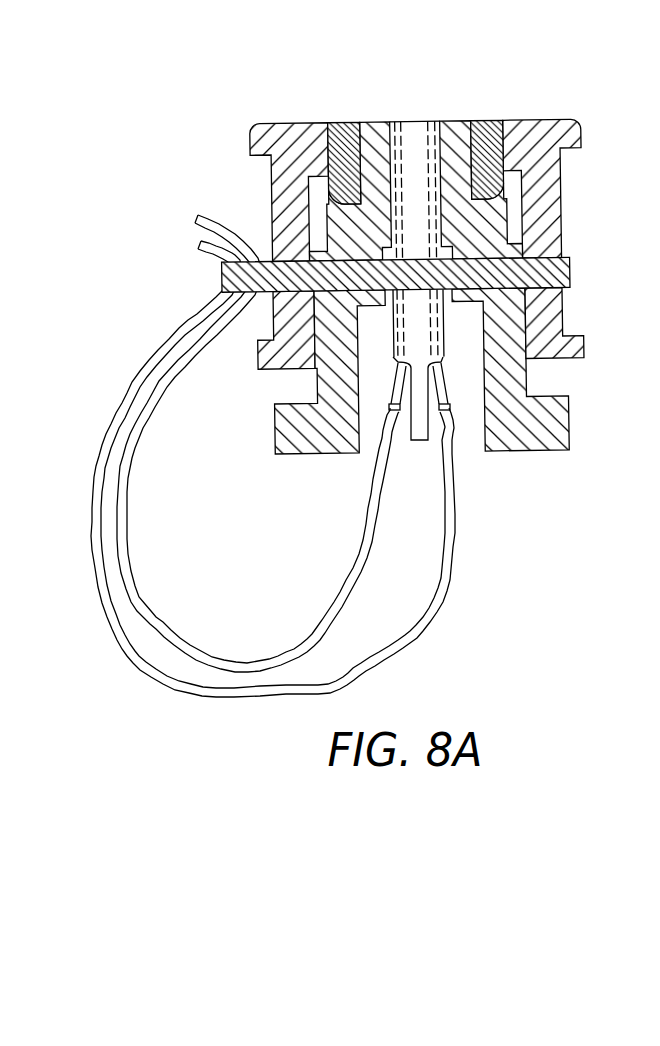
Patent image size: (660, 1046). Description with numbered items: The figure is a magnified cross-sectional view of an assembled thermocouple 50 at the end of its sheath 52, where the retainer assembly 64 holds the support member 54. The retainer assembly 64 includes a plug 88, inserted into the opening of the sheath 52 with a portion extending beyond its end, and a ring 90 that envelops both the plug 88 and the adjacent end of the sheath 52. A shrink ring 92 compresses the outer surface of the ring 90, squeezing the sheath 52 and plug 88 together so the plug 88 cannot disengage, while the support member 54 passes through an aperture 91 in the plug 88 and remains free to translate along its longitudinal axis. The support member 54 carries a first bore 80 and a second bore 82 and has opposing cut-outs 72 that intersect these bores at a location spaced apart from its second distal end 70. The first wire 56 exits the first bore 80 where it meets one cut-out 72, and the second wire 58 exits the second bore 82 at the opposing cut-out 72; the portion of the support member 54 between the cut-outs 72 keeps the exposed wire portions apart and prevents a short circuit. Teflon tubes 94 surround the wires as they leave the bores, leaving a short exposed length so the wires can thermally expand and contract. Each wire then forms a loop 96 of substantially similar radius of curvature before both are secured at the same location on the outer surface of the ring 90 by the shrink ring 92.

The thermocouple 50 is at (163, 112).
The sheath 52 is at (492, 120).
The support member 54 is at (417, 120).
The first wire 56 is at (440, 385).
The second wire 58 is at (398, 385).
The retainer assembly 64 is at (582, 227).
The second distal end 70 is at (418, 443).
The cut-out 72 is at (472, 457).
The first bore 80 is at (435, 121).
The second bore 82 is at (397, 121).
The plug 88 is at (541, 434).
The ring 90 is at (572, 352).
The aperture 91 is at (369, 120).
The shrink ring 92 is at (560, 274).
The Teflon tube 94 is at (273, 660).
The loop 96 is at (158, 626).